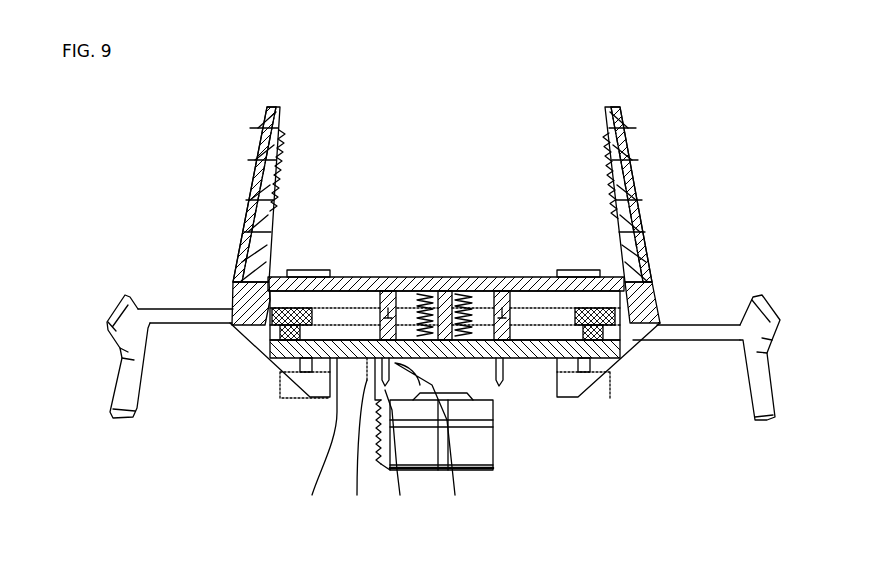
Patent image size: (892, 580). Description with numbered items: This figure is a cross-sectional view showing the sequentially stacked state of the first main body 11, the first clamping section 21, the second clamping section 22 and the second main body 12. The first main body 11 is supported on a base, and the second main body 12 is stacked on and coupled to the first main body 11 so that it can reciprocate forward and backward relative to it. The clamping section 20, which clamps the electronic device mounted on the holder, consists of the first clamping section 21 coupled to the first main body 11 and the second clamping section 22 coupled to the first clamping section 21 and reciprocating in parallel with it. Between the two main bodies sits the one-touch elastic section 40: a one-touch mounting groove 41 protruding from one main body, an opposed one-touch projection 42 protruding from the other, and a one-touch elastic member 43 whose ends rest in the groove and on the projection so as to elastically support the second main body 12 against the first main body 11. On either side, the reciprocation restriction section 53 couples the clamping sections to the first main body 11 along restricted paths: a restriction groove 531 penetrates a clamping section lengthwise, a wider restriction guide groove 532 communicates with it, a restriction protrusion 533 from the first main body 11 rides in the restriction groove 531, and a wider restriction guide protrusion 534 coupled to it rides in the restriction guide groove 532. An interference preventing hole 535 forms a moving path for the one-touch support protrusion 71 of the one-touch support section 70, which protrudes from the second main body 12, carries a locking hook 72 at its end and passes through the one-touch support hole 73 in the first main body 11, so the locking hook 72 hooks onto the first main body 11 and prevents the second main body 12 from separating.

The clamping section 20 is at (455, 216).
The first clamping section 21 is at (243, 197).
The second clamping section 22 is at (645, 197).
The second main body 12 is at (497, 278).
The first main body 11 is at (518, 360).
The one-touch elastic section 40 is at (445, 274).
The one-touch mounting groove 41 is at (398, 278).
The one-touch projection 42 is at (464, 278).
The one-touch elastic member 43 is at (436, 278).
The reciprocation restriction section 53 is at (483, 410).
The restriction groove 531 is at (567, 357).
The restriction guide groove 532 is at (549, 345).
The restriction protrusion 533 is at (617, 327).
The restriction guide protrusion 534 is at (613, 337).
The interference preventing hole 535 is at (441, 441).
The one-touch support section 70 is at (395, 370).
The one-touch support protrusion 71 is at (317, 438).
The locking hook 72 is at (358, 438).
The one-touch support hole 73 is at (399, 454).